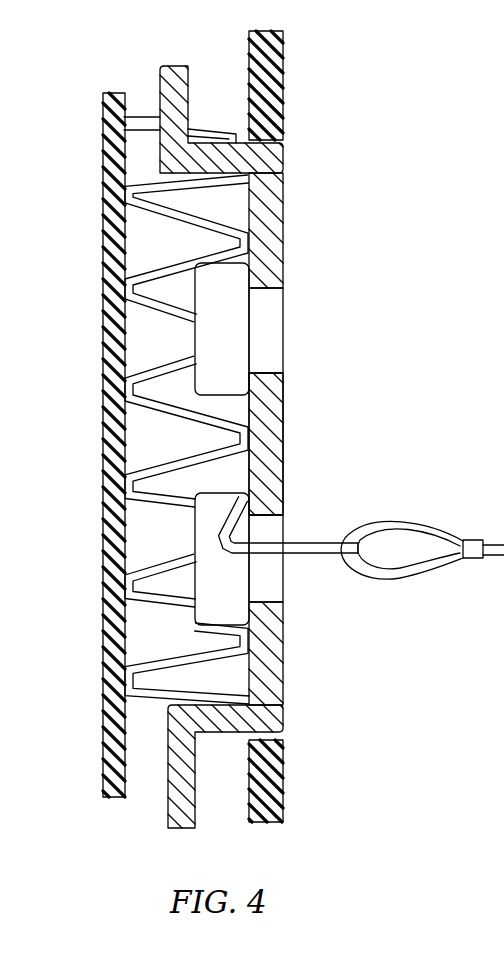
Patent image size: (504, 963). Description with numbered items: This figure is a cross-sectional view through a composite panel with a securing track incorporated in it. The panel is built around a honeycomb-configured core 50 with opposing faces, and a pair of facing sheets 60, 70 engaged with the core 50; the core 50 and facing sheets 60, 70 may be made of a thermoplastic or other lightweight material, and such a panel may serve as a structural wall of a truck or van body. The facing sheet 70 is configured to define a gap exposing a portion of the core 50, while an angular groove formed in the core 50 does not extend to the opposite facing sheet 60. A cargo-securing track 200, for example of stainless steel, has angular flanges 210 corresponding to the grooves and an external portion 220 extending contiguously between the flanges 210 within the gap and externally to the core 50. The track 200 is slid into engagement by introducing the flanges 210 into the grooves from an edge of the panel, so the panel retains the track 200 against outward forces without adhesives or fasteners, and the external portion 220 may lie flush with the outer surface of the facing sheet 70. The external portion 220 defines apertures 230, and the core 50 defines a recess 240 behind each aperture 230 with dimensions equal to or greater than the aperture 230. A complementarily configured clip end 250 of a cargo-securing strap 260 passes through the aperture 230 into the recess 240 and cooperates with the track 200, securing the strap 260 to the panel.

The honeycomb-configured core 50 is at (180, 202).
The facing sheet 60 is at (103, 240).
The facing sheet 70 is at (272, 76).
The cargo-securing track 200 is at (289, 475).
The flange 210 is at (153, 160).
The external portion 220 is at (267, 213).
The aperture 230 is at (272, 337).
The recess 240 is at (212, 502).
The clip end 250 is at (302, 558).
The cargo-securing strap 260 is at (408, 568).